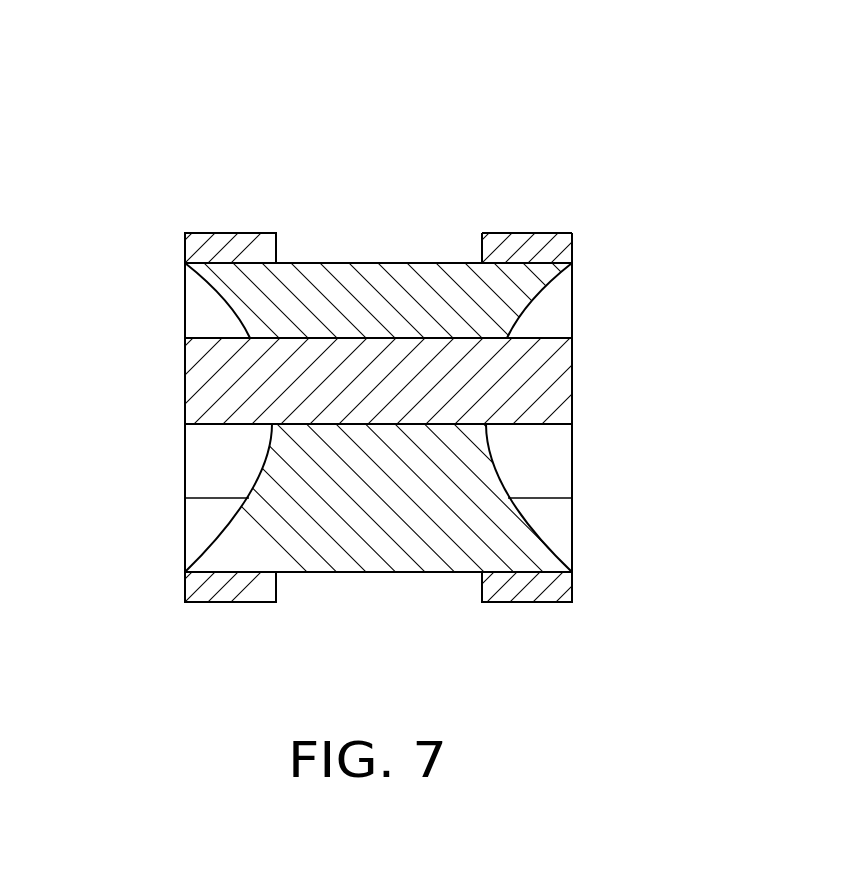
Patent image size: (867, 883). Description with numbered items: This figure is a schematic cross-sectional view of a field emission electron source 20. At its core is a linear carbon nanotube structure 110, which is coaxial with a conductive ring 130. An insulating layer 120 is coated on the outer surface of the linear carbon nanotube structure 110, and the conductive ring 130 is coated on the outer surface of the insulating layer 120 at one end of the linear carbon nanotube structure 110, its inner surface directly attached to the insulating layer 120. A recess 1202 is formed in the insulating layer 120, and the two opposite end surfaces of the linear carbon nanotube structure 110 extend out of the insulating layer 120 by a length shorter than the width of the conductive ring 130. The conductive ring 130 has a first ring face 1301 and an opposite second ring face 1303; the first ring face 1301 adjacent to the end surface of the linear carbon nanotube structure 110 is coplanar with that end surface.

The field emission electron source 20 is at (325, 62).
The conductive ring 130 is at (537, 247).
The first ring face 1301 is at (480, 247).
The second ring face 1303 is at (572, 245).
The insulating layer 120 is at (492, 292).
The recess 1202 is at (205, 313).
The linear carbon nanotube structure 110 is at (533, 375).